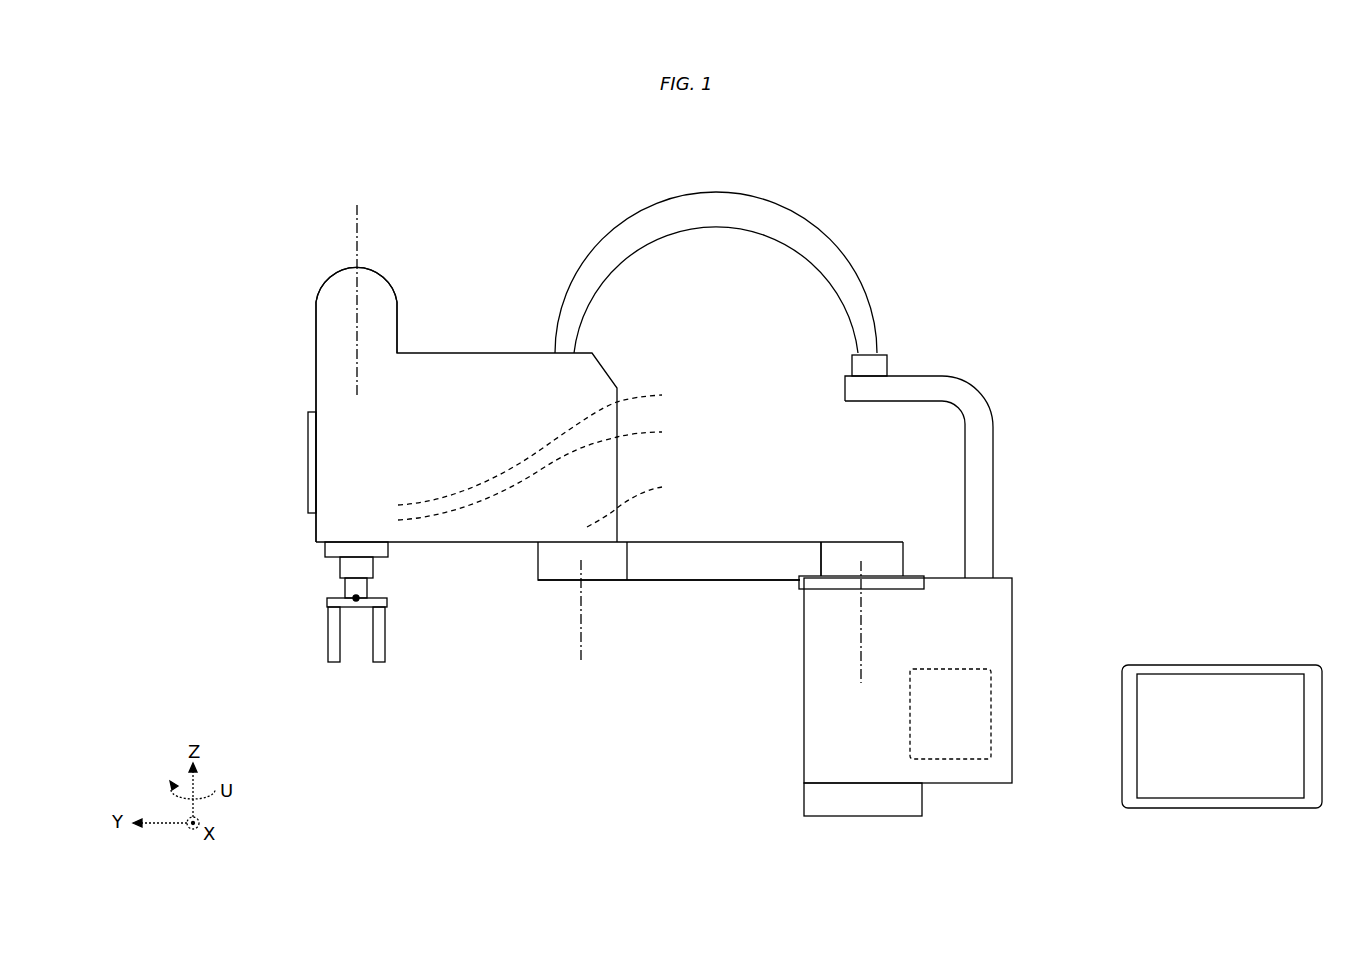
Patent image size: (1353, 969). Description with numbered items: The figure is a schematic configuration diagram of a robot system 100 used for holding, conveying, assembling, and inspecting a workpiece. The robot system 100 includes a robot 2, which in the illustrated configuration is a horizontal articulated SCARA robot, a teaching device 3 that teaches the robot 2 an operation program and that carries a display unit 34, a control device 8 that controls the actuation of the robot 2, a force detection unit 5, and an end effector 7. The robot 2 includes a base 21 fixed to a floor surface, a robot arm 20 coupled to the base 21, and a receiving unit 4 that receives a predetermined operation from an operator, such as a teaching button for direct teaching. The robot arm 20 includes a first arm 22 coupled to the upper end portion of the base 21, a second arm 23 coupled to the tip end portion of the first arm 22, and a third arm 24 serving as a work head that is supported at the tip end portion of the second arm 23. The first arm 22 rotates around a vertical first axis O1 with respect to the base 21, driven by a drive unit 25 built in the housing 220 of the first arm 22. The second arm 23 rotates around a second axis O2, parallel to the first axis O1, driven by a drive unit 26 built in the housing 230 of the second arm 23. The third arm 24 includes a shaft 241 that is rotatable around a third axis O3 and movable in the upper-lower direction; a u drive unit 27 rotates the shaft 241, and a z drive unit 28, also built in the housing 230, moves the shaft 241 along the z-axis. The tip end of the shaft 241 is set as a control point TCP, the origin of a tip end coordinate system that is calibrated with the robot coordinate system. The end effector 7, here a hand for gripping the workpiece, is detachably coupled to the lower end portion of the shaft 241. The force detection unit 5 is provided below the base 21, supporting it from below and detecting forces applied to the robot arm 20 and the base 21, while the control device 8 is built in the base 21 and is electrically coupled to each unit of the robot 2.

The robot system 100 is at (936, 186).
The robot 2 is at (637, 213).
The housing of the second arm 230 is at (474, 352).
The second arm 23 is at (340, 363).
The third axis O3 is at (362, 219).
The receiving unit 4 is at (308, 460).
The z drive unit 28 is at (546, 444).
The u drive unit 27 is at (546, 470).
The drive unit 26 is at (641, 501).
The third arm 24 is at (345, 568).
The shaft 241 is at (371, 591).
The control point TCP is at (353, 597).
The end effector 7 is at (395, 633).
The robot arm 20 is at (730, 535).
The first arm 22 is at (665, 565).
The housing of the first arm 220 is at (792, 555).
The drive unit 25 is at (872, 575).
The second axis O2 is at (578, 612).
The base 21 is at (983, 621).
The first axis O1 is at (850, 668).
The control device 8 is at (991, 720).
The force detection unit 5 is at (830, 800).
The teaching device 3 is at (1272, 663).
The display unit 34 is at (1222, 765).